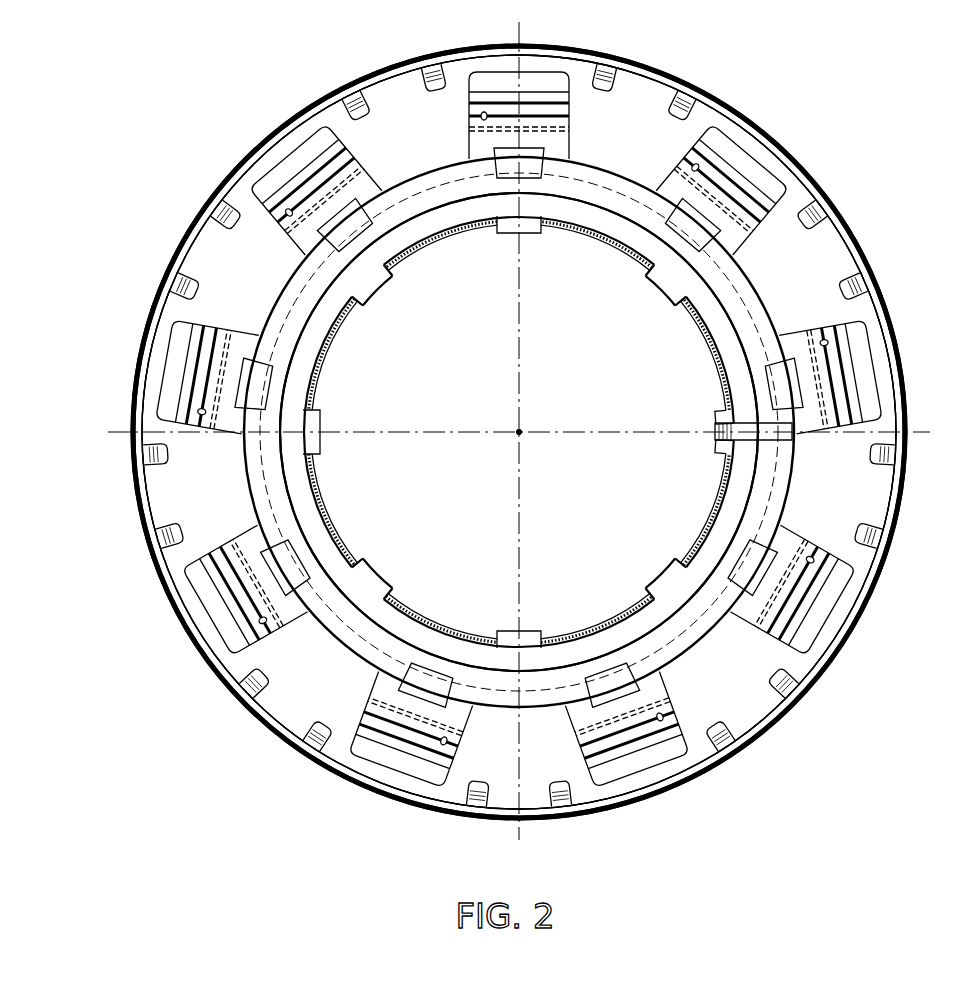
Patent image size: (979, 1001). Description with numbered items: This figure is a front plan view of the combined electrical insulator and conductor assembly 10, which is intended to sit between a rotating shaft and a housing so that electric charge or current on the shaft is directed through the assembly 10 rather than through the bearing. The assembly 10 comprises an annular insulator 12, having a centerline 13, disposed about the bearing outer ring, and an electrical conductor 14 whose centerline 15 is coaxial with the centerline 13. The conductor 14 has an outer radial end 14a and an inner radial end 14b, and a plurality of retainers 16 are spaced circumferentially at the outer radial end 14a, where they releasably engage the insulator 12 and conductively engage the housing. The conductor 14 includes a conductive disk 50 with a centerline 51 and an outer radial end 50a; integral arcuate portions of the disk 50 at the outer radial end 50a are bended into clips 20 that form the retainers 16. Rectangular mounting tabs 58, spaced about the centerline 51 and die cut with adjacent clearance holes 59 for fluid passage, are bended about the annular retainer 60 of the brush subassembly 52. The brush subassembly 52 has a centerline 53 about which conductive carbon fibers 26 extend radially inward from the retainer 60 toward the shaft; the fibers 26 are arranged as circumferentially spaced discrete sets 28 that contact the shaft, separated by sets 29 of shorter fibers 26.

The combined electrical insulator and conductor assembly 10 is at (101, 79).
The annular insulator 12 is at (153, 270).
The centerline 13 is at (523, 428).
The electrical conductor 14 is at (88, 393).
The outer radial end 14a is at (113, 506).
The inner radial end 14b is at (333, 420).
The centerline 15 is at (545, 407).
The retainer 16 is at (659, 53).
The clip 20 is at (680, 71).
The conductive fiber 26 is at (391, 281).
The discrete set of fibers 28 is at (531, 243).
The set of shorter length fibers 29 is at (591, 243).
The conductive disk 50 is at (878, 511).
The outer radial end 50a is at (652, 792).
The centerline 51 is at (534, 418).
The brush subassembly 52 is at (795, 481).
The centerline 53 is at (523, 428).
The mounting tab 58 is at (325, 230).
The clearance hole 59 is at (335, 178).
The annular retainer 60 is at (282, 290).